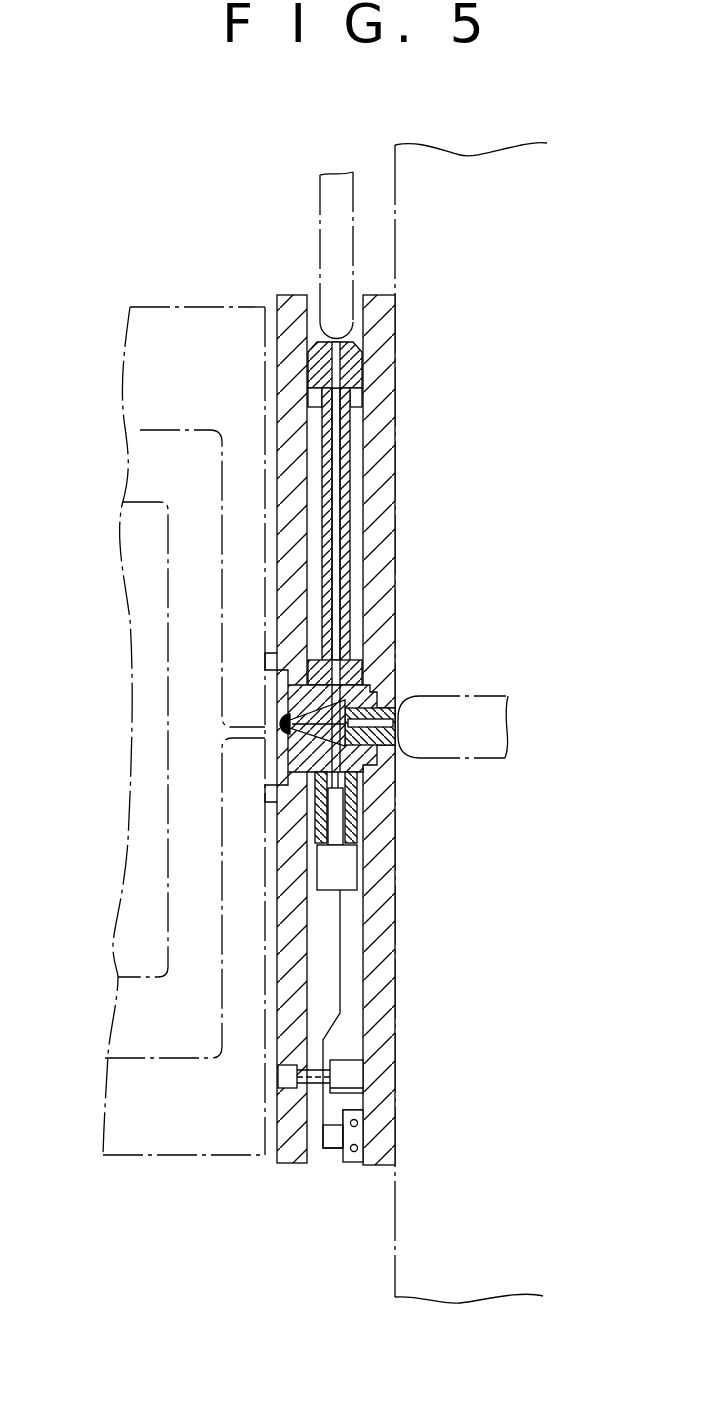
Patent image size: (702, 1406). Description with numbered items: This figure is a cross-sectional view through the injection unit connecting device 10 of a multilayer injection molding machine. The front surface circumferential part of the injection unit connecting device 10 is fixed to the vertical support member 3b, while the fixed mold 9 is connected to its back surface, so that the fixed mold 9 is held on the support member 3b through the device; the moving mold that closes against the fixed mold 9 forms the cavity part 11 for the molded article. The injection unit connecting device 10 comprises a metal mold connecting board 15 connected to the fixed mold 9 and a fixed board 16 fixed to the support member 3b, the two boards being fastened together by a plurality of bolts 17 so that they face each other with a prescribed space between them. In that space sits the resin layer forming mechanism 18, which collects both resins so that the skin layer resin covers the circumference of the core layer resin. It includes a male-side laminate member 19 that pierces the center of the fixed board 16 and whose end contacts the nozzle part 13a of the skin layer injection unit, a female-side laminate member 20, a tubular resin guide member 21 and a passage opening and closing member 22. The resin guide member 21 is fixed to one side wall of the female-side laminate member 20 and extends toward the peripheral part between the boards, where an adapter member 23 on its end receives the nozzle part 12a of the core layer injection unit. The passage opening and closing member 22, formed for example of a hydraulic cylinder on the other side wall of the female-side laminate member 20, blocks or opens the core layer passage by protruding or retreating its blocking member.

The support member 3b is at (507, 163).
The fixed mold 9 is at (160, 318).
The injection unit connecting device 10 is at (412, 284).
The cavity part 11 is at (186, 477).
The nozzle part 12a is at (327, 193).
The nozzle part 13a is at (485, 697).
The metal mold connecting board 15 is at (292, 295).
The fixed board 16 is at (383, 333).
The bolt 17 is at (355, 1079).
The resin layer forming mechanism 18 is at (378, 784).
The male-side laminate member 19 is at (395, 698).
The female-side laminate member 20 is at (290, 700).
The resin guide member 21 is at (350, 452).
The passage opening and closing member 22 is at (350, 863).
The adapter member 23 is at (357, 385).